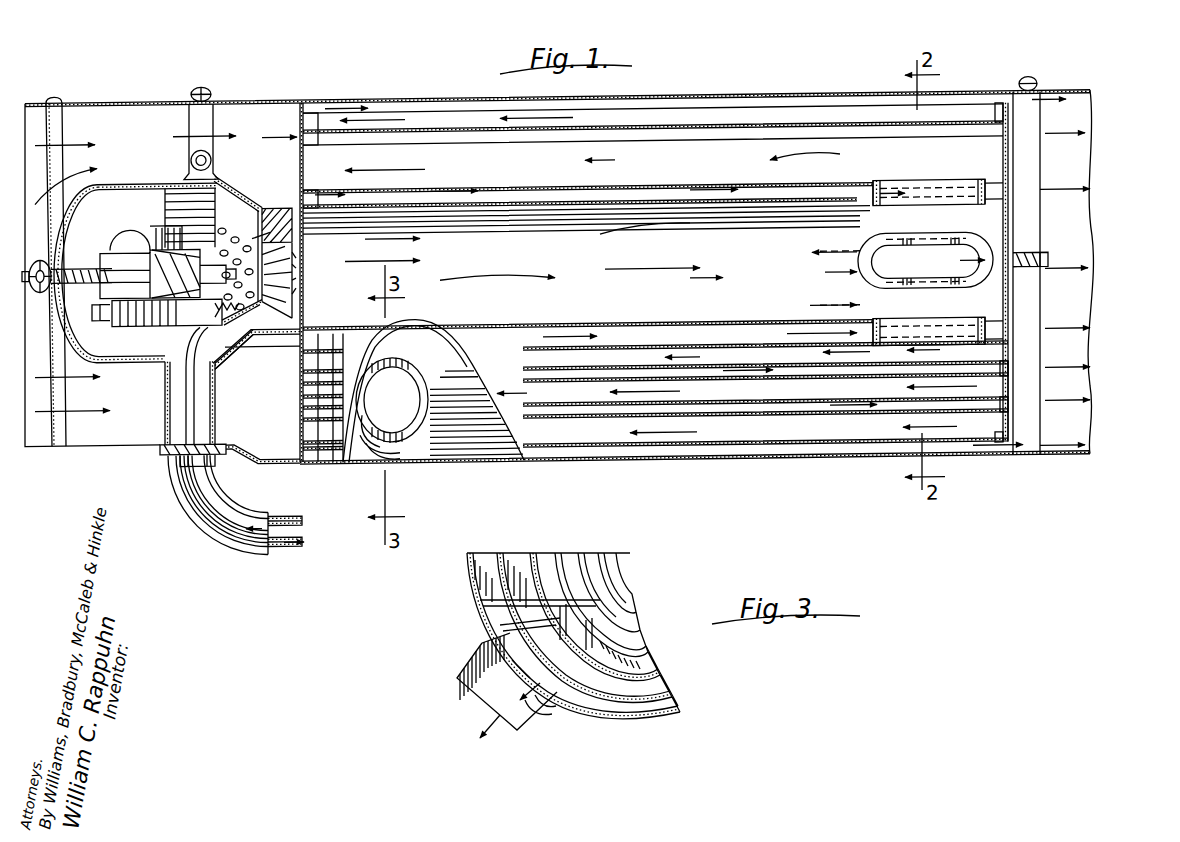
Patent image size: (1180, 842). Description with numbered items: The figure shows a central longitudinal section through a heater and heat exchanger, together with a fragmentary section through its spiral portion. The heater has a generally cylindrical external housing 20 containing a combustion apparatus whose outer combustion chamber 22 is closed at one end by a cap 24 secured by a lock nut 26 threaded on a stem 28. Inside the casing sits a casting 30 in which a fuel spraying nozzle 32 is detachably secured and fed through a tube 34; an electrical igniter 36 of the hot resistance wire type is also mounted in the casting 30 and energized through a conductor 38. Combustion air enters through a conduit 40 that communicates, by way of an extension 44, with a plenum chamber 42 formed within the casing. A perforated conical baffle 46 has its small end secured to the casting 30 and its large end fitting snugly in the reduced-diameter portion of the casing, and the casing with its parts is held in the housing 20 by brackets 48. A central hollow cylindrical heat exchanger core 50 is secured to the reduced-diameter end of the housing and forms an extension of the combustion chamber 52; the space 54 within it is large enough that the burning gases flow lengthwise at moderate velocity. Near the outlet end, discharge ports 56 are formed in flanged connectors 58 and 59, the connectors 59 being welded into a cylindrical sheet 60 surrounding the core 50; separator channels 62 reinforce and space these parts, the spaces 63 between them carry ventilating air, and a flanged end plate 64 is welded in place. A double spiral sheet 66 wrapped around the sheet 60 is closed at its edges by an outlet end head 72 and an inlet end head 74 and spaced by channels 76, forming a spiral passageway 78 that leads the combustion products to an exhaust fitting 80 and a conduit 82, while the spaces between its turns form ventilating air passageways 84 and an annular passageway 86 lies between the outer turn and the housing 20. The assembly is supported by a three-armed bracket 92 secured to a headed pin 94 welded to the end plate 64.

In FIG. 1, the external housing 20 is at (262, 105).
In FIG. 3, the external housing 20 is at (660, 728).
In FIG. 1, the outer combustion chamber 22 is at (240, 196).
In FIG. 1, the cap 24 is at (127, 188).
In FIG. 1, the lock nut 26 is at (62, 255).
In FIG. 1, the stem 28 is at (84, 280).
In FIG. 1, the casting 30 is at (172, 246).
In FIG. 1, the fuel spraying nozzle 32 is at (125, 304).
In FIG. 1, the tube 34 is at (165, 458).
In FIG. 1, the electrical igniter 36 is at (165, 388).
In FIG. 1, the conductor 38 is at (228, 408).
In FIG. 1, the conduit 40 is at (242, 516).
In FIG. 1, the plenum chamber 42 is at (190, 205).
In FIG. 1, the extension 44 is at (235, 381).
In FIG. 1, the perforated conical baffle 46 is at (292, 215).
In FIG. 1, the brackets 48 is at (205, 128).
In FIG. 1, the heat exchanger core 50 is at (712, 196).
In FIG. 3, the heat exchanger core 50 is at (595, 570).
In FIG. 1, the combustion chamber 52 is at (290, 278).
In FIG. 1, the space 54 is at (600, 236).
In FIG. 1, the discharge ports 56 is at (905, 198).
In FIG. 1, the flanged connectors 58 is at (940, 256).
In FIG. 1, the flanged connectors 59 is at (985, 196).
In FIG. 1, the cylindrical sheet 60 is at (725, 335).
In FIG. 3, the cylindrical sheet 60 is at (628, 612).
In FIG. 1, the separator channels 62 is at (350, 341).
In FIG. 3, the separator channels 62 is at (630, 624).
In FIG. 1, the spaces 63 is at (645, 336).
In FIG. 1, the flanged end plate 64 is at (1042, 230).
In FIG. 1, the double spiral sheet 66 is at (628, 469).
In FIG. 3, the double spiral sheet 66 is at (680, 705).
In FIG. 1, the outlet end head 72 is at (1022, 436).
In FIG. 1, the inlet end head 74 is at (315, 466).
In FIG. 3, the channels 76 is at (485, 603).
In FIG. 1, the spiral passageway 78 is at (545, 400).
In FIG. 3, the spiral passageway 78 is at (520, 616).
In FIG. 1, the exhaust fitting 80 is at (428, 404).
In FIG. 3, the exhaust fitting 80 is at (540, 716).
In FIG. 1, the conduit 82 is at (420, 448).
In FIG. 3, the conduit 82 is at (495, 740).
In FIG. 1, the ventilating air passageways 84 is at (582, 430).
In FIG. 3, the ventilating air passageways 84 is at (645, 650).
In FIG. 1, the annular passageway 86 is at (805, 470).
In FIG. 3, the annular passageway 86 is at (640, 720).
In FIG. 1, the three-armed bracket 92 is at (1045, 130).
In FIG. 1, the headed pin 94 is at (1050, 272).